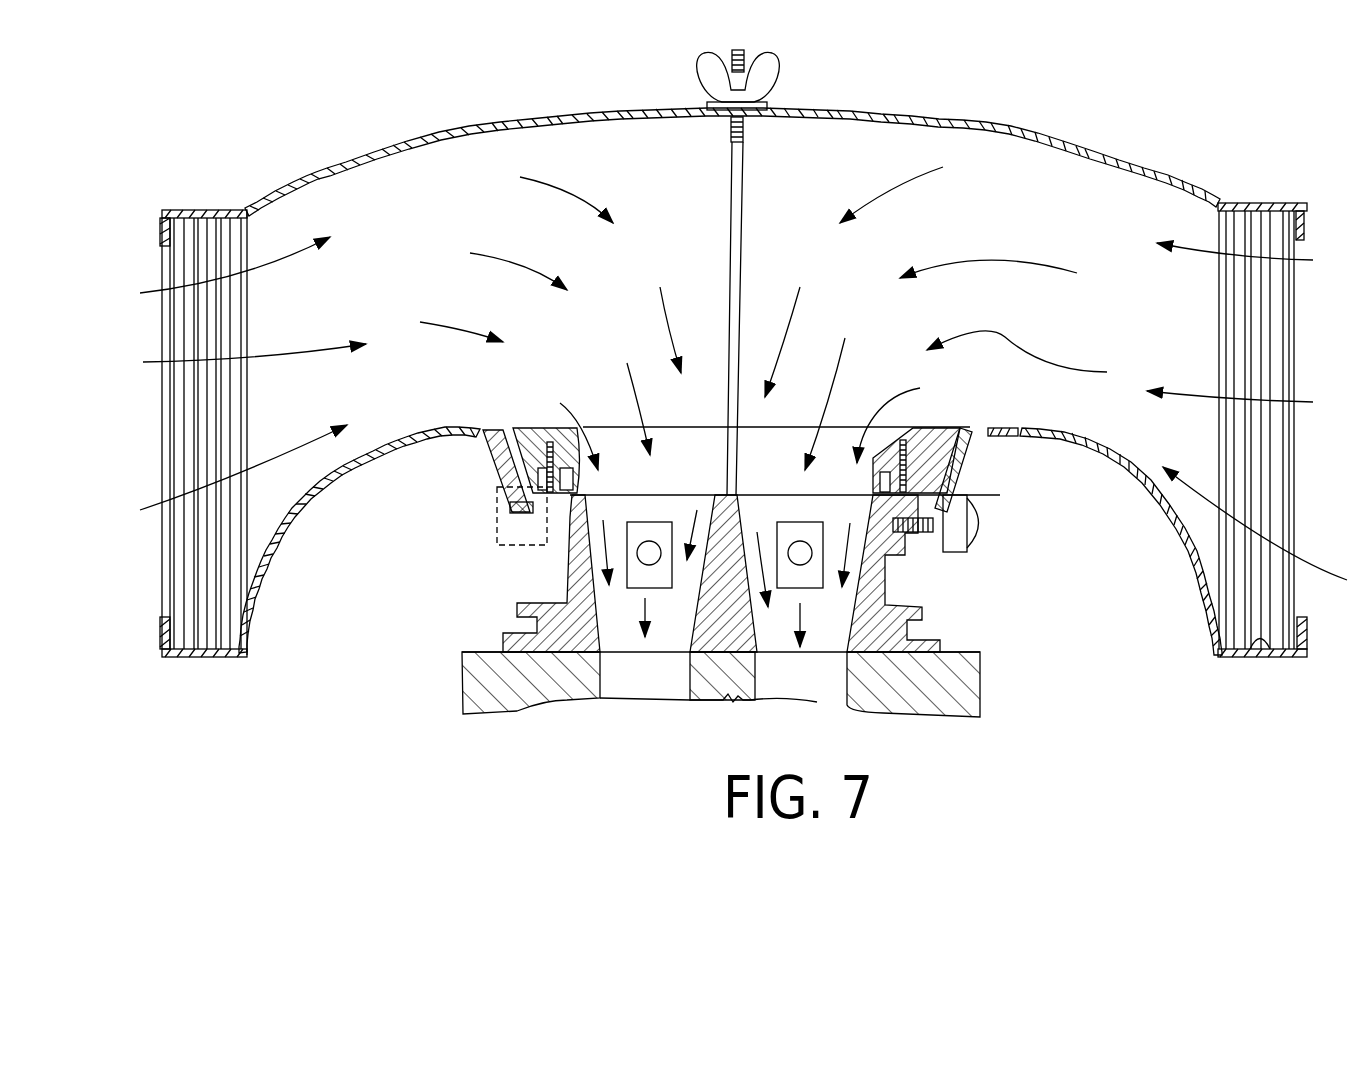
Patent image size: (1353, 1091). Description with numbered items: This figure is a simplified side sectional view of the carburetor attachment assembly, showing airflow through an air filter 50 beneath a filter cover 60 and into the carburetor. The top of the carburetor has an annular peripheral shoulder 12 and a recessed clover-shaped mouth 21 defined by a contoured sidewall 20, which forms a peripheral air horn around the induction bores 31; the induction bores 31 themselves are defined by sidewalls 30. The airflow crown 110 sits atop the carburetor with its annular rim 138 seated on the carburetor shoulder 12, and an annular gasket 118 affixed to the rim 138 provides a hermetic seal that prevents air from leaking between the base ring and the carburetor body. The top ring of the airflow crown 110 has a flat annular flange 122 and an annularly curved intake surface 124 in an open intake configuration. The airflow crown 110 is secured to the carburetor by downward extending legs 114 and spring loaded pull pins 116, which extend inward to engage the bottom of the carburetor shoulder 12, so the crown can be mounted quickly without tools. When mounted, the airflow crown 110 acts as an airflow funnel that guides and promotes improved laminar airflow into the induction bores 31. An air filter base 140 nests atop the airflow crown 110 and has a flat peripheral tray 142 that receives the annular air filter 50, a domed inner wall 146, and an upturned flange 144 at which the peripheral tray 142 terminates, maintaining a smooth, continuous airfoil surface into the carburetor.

The dome cover 60 is at (1023, 135).
The annular peripheral shoulder 12 is at (510, 428).
The contoured sidewall 20 is at (590, 520).
The recessed clover-shaped mouth 21 is at (687, 526).
The induction bores 31 is at (680, 641).
The sidewalls 30 is at (600, 633).
The annular rim 138 is at (512, 503).
The annular gasket 118 is at (512, 520).
The intake surface 124 is at (890, 437).
The airflow crown 110 is at (940, 420).
The flat annular flange 122 is at (1005, 428).
The domed inner wall 146 is at (1090, 440).
The air filter base 140 is at (1158, 507).
The spring loaded pull pins 116 is at (983, 517).
The downward extending legs 114 is at (955, 537).
The annular air filter 50 is at (1257, 567).
The flat peripheral tray 142 is at (1250, 648).
The upturned flange 144 is at (1302, 640).